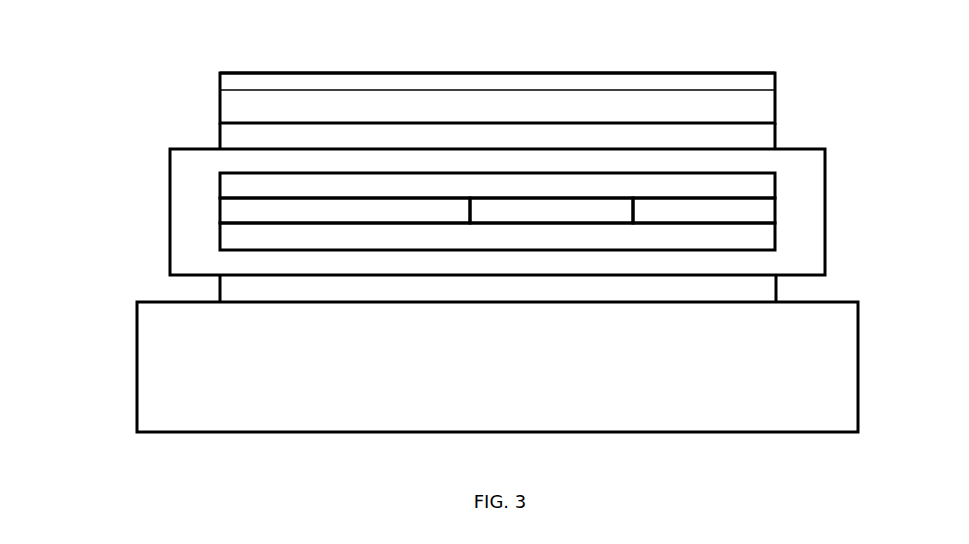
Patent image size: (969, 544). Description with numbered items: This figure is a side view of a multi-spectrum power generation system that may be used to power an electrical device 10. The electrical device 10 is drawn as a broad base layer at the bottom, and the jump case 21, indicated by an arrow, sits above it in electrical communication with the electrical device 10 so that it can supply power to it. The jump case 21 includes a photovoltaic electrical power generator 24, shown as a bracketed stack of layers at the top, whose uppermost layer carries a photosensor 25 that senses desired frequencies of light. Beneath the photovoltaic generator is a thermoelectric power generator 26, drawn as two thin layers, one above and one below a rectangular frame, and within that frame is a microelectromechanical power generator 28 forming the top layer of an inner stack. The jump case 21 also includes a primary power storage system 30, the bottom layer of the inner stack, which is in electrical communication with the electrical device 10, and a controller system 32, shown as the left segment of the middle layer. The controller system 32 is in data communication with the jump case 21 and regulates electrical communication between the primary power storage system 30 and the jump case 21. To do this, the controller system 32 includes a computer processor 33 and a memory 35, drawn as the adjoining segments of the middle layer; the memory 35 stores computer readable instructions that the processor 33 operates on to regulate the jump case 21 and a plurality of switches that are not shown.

The electrical device 10 is at (497, 367).
The jump case 21 is at (133, 142).
The photovoltaic electrical power generator 24 is at (207, 73).
The photosensor 25 is at (735, 74).
The thermoelectric power generator 26 is at (498, 212).
The microelectromechanical power generator 28 is at (497, 186).
The primary power storage system 30 is at (497, 236).
The controller system 32 is at (335, 212).
The computer processor 33 is at (551, 210).
The memory 35 is at (704, 210).